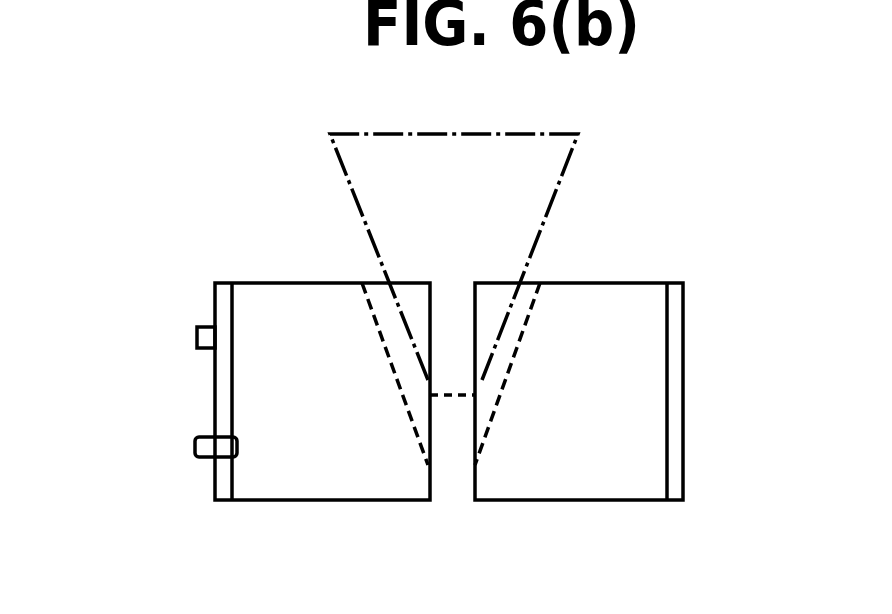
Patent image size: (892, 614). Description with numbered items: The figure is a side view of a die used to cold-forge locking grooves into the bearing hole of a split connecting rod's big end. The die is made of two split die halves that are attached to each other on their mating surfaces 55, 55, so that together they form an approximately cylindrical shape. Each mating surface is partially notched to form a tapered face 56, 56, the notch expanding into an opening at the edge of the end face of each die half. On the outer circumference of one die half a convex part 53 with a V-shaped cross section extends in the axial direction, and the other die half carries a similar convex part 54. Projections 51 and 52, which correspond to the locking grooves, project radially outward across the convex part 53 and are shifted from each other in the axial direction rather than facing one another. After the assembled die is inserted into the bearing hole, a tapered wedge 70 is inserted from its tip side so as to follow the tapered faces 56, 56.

The projection 51 is at (195, 447).
The projection 52 is at (210, 347).
The convex part 53 is at (213, 291).
The convex part 54 is at (685, 342).
The mating surface 55 is at (430, 467).
The tapered face 56 is at (392, 360).
The tapered wedge 70 is at (565, 182).